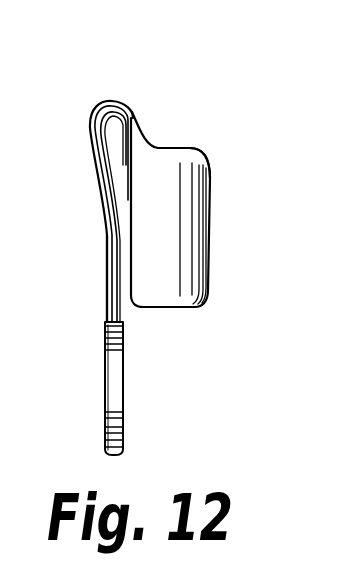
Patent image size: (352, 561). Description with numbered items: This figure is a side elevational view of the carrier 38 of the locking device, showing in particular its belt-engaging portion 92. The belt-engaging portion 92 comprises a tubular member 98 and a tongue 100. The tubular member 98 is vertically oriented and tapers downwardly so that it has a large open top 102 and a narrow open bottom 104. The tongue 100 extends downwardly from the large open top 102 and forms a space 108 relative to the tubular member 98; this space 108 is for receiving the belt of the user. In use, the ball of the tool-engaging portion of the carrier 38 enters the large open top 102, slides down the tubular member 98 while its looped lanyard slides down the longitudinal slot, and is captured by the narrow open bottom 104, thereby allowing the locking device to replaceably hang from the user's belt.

The carrier 38 is at (106, 257).
The belt-engaging portion 92 is at (133, 103).
The tubular member 98 is at (168, 238).
The tongue 100 is at (113, 390).
The large open top 102 is at (177, 145).
The narrow open bottom 104 is at (170, 308).
The space 108 is at (115, 120).